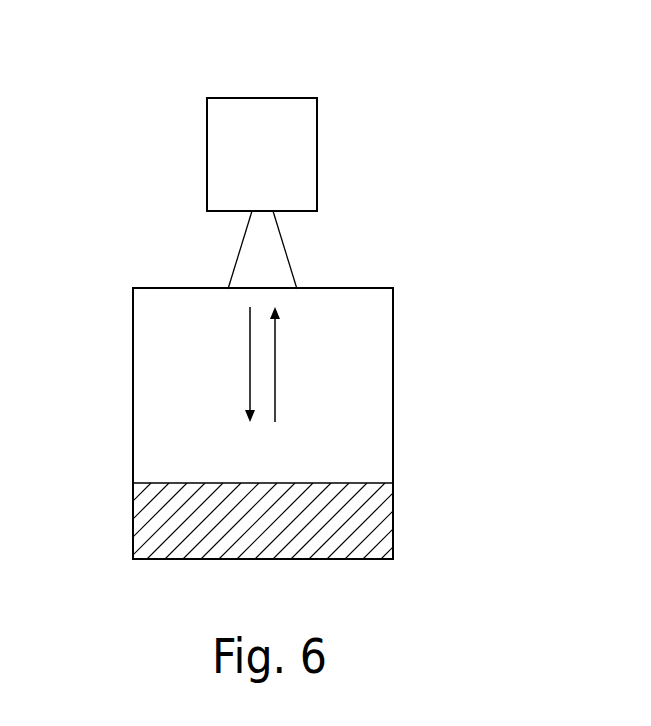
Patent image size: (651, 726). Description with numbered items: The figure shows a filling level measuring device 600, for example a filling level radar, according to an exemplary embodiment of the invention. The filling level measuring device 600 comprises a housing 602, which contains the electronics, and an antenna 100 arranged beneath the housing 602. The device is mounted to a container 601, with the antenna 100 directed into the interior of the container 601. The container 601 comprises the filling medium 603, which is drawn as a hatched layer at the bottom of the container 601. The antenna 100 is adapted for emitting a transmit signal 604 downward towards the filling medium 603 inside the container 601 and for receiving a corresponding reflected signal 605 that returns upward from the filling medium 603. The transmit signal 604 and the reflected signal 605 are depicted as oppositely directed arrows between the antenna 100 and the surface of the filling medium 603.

The filling level measuring device 600 is at (331, 147).
The housing 602 is at (266, 112).
The antenna 100 is at (253, 260).
The container 601 is at (380, 428).
The filling medium 603 is at (382, 523).
The transmit signal 604 is at (248, 360).
The reflected signal 605 is at (277, 380).